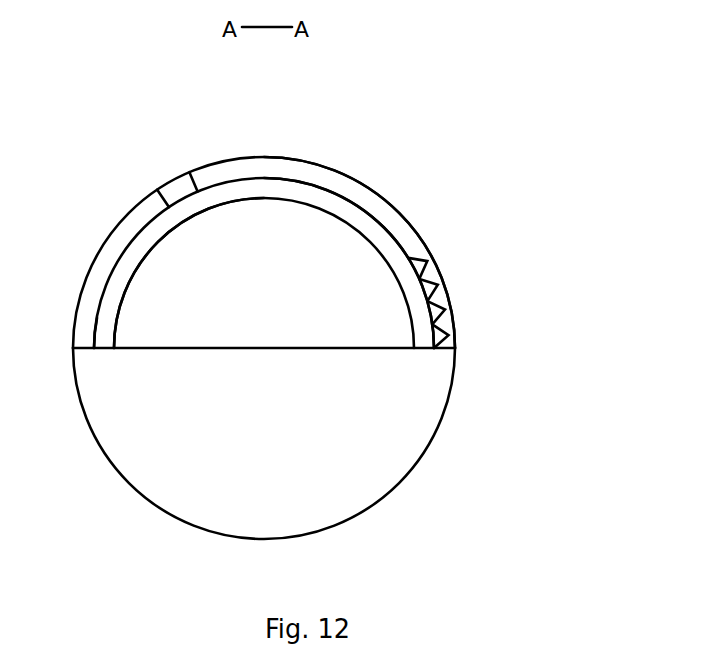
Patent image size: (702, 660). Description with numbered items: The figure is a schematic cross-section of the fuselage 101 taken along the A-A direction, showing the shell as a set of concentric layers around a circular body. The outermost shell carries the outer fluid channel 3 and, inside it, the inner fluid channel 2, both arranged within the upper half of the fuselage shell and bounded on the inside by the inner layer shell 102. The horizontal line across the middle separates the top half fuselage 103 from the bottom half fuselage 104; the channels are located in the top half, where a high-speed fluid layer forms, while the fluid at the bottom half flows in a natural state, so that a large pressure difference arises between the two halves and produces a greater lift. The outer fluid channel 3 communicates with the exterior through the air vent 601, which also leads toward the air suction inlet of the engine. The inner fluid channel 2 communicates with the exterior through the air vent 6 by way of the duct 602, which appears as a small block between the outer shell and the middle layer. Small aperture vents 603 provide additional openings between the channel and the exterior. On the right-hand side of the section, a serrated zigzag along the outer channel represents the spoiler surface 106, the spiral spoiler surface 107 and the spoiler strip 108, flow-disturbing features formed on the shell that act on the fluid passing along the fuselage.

The fuselage 101 is at (260, 157).
The inner layer shell 102 is at (385, 222).
The top half fuselage 103 is at (198, 277).
The bottom half fuselage 104 is at (200, 390).
The spoiler surface 106 is at (432, 312).
The spiral spoiler surface 107 is at (97, 318).
The spoiler strip 108 is at (440, 293).
The inner fluid channel 2 is at (345, 210).
The outer fluid channel 3 is at (310, 175).
The air vent 6 is at (150, 192).
The air vent 601 is at (440, 263).
The duct 602 is at (180, 190).
The small aperture vents 603 is at (405, 252).